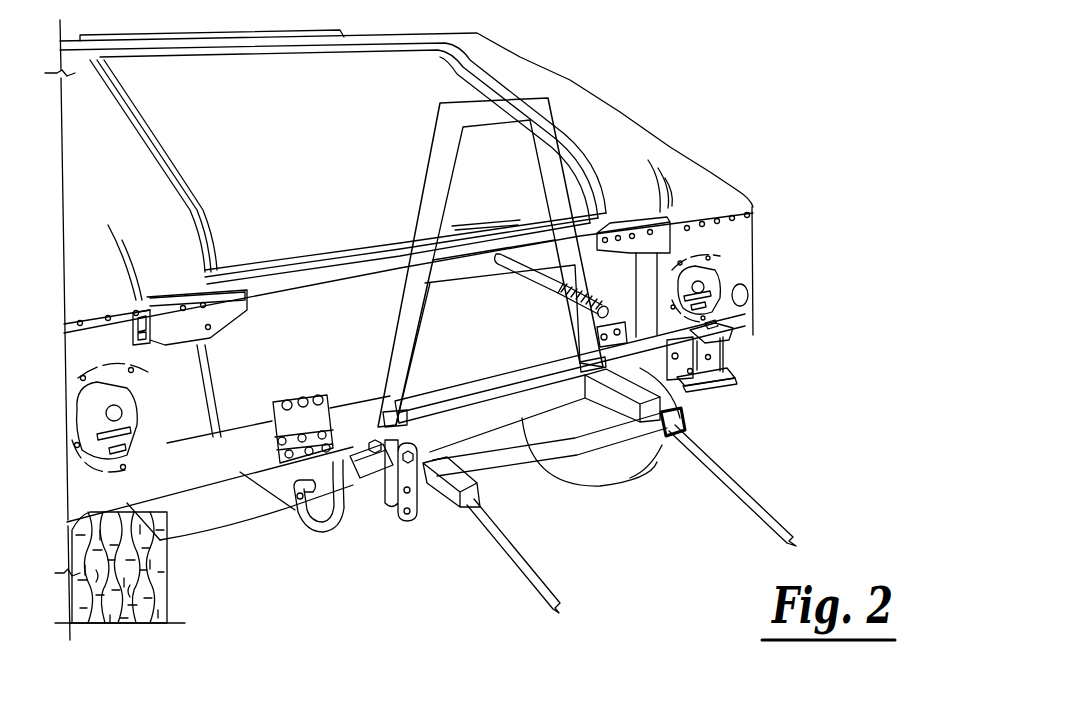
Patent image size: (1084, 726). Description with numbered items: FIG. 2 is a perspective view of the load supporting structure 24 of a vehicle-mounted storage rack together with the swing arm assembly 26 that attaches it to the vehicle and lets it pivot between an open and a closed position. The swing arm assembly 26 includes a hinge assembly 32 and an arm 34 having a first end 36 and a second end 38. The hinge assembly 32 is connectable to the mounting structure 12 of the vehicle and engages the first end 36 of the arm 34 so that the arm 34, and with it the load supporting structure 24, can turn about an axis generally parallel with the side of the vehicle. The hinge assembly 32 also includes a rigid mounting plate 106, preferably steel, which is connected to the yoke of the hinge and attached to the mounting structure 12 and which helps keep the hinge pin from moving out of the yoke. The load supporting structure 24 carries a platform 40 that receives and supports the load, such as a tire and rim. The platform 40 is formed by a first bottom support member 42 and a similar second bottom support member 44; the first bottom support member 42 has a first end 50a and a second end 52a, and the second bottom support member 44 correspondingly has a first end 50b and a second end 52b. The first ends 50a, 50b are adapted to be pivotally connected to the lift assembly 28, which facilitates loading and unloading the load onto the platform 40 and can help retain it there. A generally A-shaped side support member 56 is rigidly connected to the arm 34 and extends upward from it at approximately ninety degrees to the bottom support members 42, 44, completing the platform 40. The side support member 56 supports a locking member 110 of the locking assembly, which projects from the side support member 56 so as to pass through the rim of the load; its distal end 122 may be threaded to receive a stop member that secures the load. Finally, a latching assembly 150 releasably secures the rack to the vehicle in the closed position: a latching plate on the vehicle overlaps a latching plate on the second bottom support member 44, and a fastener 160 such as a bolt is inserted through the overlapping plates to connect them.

The mounting structure 12 is at (746, 352).
The load supporting structure 24 is at (453, 507).
The swing arm assembly 26 is at (742, 345).
The lift assembly 28 is at (758, 503).
The hinge assembly 32 is at (750, 354).
The arm 34 is at (660, 398).
The first end 36 is at (653, 342).
The second end 38 is at (372, 448).
The platform 40 is at (413, 438).
The first bottom support member 42 is at (600, 398).
The second bottom support member 44 is at (442, 493).
The first end 50a is at (657, 463).
The first end 50b is at (466, 506).
The second end 52a is at (588, 367).
The second end 52b is at (398, 392).
The side support member 56 is at (428, 163).
The mounting plate 106 is at (707, 388).
The locking member 110 is at (527, 272).
The distal end 122 is at (595, 312).
The latching assembly 150 is at (360, 478).
The fastener 160 is at (323, 512).